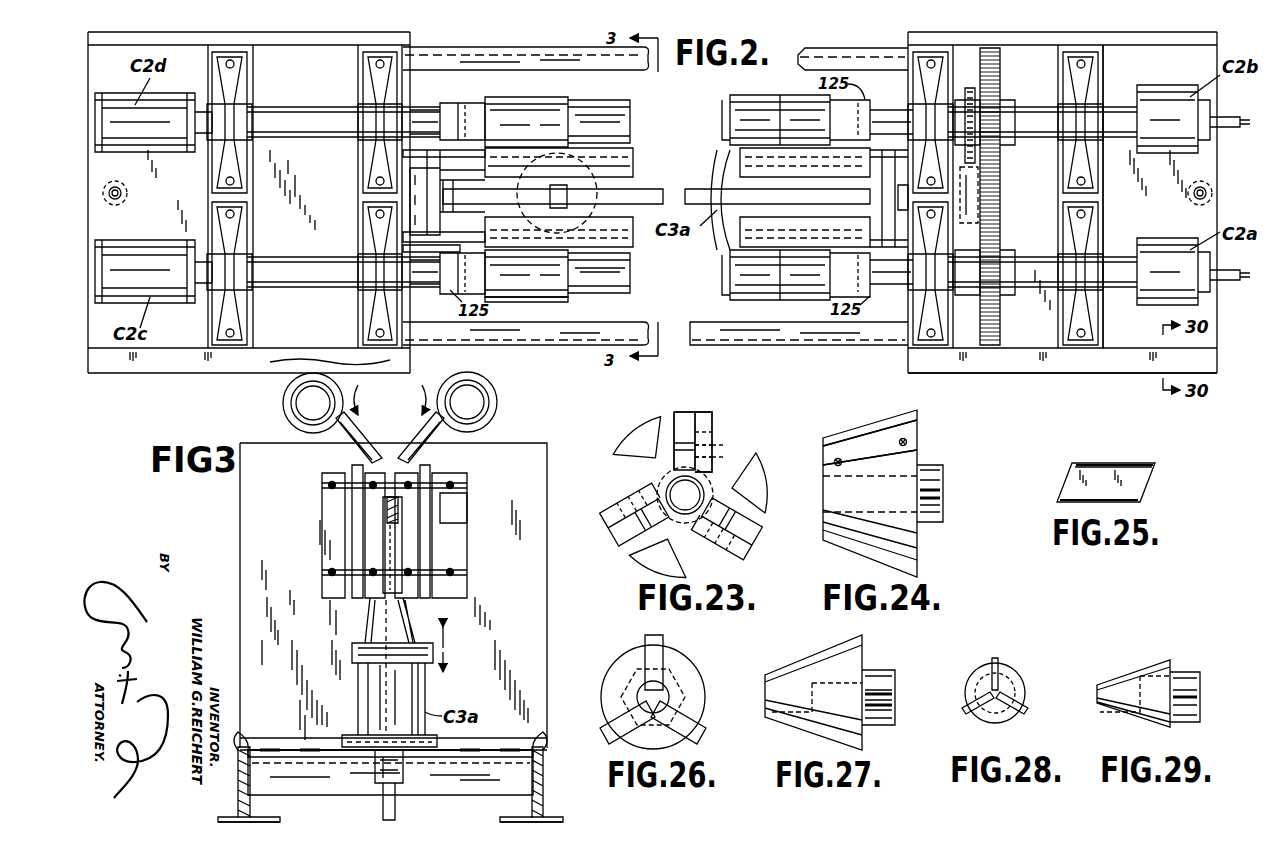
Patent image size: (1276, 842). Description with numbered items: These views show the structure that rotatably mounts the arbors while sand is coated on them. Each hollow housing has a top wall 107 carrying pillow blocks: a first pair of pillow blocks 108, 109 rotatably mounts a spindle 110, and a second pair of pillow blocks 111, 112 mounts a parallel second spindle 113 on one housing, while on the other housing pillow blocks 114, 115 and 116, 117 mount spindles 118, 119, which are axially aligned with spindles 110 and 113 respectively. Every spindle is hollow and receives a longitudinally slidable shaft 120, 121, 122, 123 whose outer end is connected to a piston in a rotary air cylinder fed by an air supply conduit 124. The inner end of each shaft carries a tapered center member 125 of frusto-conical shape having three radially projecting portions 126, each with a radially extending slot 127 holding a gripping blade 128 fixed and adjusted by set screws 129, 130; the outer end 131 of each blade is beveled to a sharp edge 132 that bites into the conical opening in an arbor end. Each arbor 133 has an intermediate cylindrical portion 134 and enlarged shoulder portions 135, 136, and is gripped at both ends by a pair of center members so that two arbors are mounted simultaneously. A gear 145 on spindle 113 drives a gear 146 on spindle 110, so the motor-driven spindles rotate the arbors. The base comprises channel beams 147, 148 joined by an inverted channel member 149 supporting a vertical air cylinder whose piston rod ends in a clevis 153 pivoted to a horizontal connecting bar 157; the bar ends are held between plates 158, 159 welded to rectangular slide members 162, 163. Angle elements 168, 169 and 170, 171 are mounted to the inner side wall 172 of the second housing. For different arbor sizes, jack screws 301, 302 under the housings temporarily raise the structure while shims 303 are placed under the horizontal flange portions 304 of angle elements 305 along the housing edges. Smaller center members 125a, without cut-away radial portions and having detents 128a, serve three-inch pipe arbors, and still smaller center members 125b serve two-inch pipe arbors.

In FIG. 2, the top wall 107 is at (1126, 342).
In FIG. 2, the pillow block 108 is at (925, 336).
In FIG. 2, the pillow block 109 is at (1076, 350).
In FIG. 2, the spindle 110 is at (1040, 262).
In FIG. 2, the pillow block 111 is at (925, 62).
In FIG. 2, the pillow block 112 is at (1084, 62).
In FIG. 2, the second spindle 113 is at (1048, 99).
In FIG. 2, the pillow block 114 is at (238, 337).
In FIG. 2, the pillow block 115 is at (395, 368).
In FIG. 2, the pillow block 116 is at (236, 62).
In FIG. 2, the pillow block 117 is at (378, 64).
In FIG. 2, the spindle 118 is at (297, 288).
In FIG. 2, the spindle 119 is at (307, 138).
In FIG. 2, the shaft 120 is at (880, 286).
In FIG. 2, the shaft 121 is at (880, 110).
In FIG. 2, the shaft 122 is at (422, 286).
In FIG. 2, the shaft 123 is at (412, 114).
In FIG. 2, the air supply conduit 124 is at (1240, 107).
In FIG. 2, the center member 125 is at (447, 106).
In FIG. 23, the center member 125 is at (620, 482).
In FIG. 24, the center member 125 is at (843, 555).
In FIG. 26, the center member 125a is at (690, 670).
In FIG. 27, the center member 125a is at (809, 657).
In FIG. 28, the center member 125b is at (1025, 645).
In FIG. 29, the center member 125b is at (1140, 666).
In FIG. 23, the radially projecting portion 126 is at (650, 430).
In FIG. 24, the radially projecting portion 126 is at (828, 492).
In FIG. 23, the radially extending slot 127 is at (686, 410).
In FIG. 23, the gripping blade 128 is at (700, 428).
In FIG. 25, the gripping blade 128 is at (1150, 490).
In FIG. 26, the detent 128a is at (660, 650).
In FIG. 23, the set screw 129 is at (714, 457).
In FIG. 24, the set screw 129 is at (838, 457).
In FIG. 23, the set screw 130 is at (714, 444).
In FIG. 24, the set screw 130 is at (903, 438).
In FIG. 23, the outer end 131 is at (693, 425).
In FIG. 23, the sharp edge 132 is at (675, 420).
In FIG. 2, the arbor 133 is at (630, 120).
In FIG. 2, the intermediate cylindrical portion 134 is at (630, 272).
In FIG. 3, the intermediate cylindrical portion 134 is at (297, 424).
In FIG. 2, the shoulder portion 135 is at (545, 300).
In FIG. 3, the shoulder portion 135 is at (284, 392).
In FIG. 2, the shoulder portion 136 is at (755, 303).
In FIG. 2, the gear 145 is at (1001, 68).
In FIG. 2, the gear 146 is at (1000, 210).
In FIG. 3, the channel beam 147 is at (250, 812).
In FIG. 3, the channel beam 148 is at (528, 806).
In FIG. 3, the inverted channel member 149 is at (450, 786).
In FIG. 3, the clevis 153 is at (402, 535).
In FIG. 2, the connecting bar 157 is at (652, 188).
In FIG. 2, the plate 158 is at (478, 180).
In FIG. 3, the plate 158 is at (389, 512).
In FIG. 2, the plate 159 is at (870, 198).
In FIG. 3, the slide member 162 is at (463, 506).
In FIG. 2, the slide member 163 is at (876, 214).
In FIG. 2, the angle element 168 is at (445, 153).
In FIG. 3, the angle element 168 is at (464, 477).
In FIG. 2, the angle element 169 is at (424, 192).
In FIG. 3, the angle element 169 is at (432, 600).
In FIG. 2, the angle element 170 is at (447, 229).
In FIG. 3, the angle element 170 is at (358, 600).
In FIG. 2, the angle element 171 is at (445, 256).
In FIG. 3, the angle element 171 is at (330, 474).
In FIG. 2, the inner side wall 172 is at (372, 200).
In FIG. 2, the jack screw 301 is at (1212, 193).
In FIG. 2, the jack screw 302 is at (120, 196).
In FIG. 3, the jack screw 302 is at (376, 772).
In FIG. 3, the shim 303 is at (565, 821).
In FIG. 2, the horizontal flange portion 304 is at (1012, 372).
In FIG. 3, the horizontal flange portion 304 is at (549, 802).
In FIG. 3, the angle element 305 is at (545, 795).